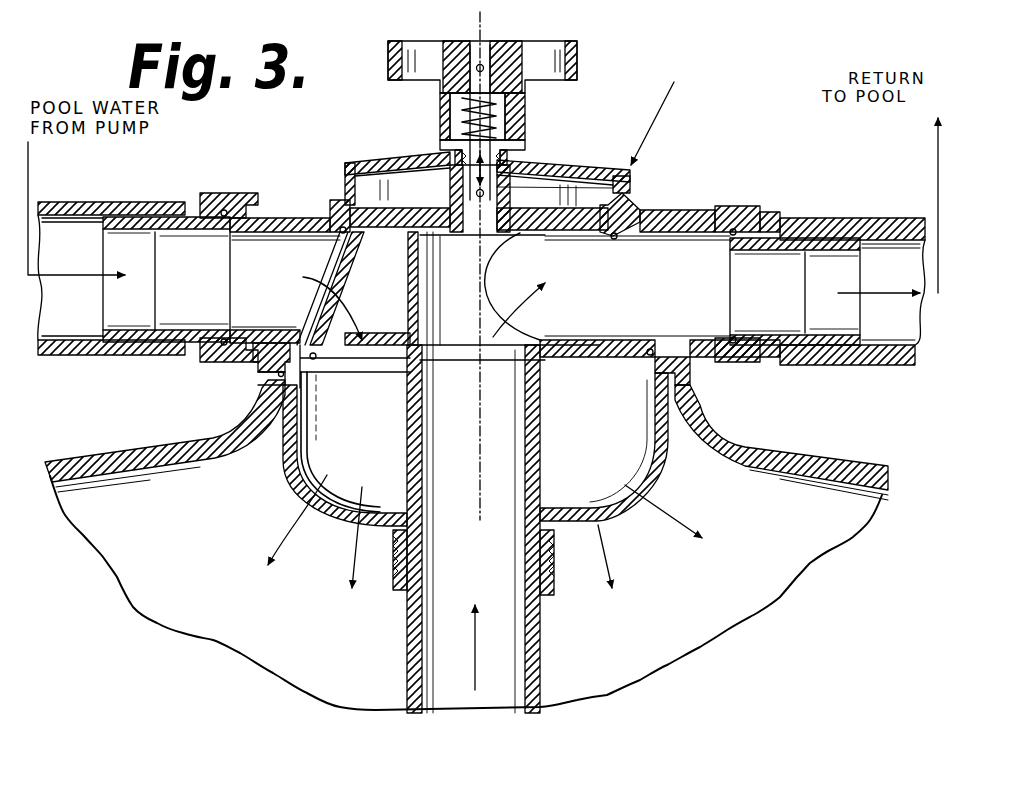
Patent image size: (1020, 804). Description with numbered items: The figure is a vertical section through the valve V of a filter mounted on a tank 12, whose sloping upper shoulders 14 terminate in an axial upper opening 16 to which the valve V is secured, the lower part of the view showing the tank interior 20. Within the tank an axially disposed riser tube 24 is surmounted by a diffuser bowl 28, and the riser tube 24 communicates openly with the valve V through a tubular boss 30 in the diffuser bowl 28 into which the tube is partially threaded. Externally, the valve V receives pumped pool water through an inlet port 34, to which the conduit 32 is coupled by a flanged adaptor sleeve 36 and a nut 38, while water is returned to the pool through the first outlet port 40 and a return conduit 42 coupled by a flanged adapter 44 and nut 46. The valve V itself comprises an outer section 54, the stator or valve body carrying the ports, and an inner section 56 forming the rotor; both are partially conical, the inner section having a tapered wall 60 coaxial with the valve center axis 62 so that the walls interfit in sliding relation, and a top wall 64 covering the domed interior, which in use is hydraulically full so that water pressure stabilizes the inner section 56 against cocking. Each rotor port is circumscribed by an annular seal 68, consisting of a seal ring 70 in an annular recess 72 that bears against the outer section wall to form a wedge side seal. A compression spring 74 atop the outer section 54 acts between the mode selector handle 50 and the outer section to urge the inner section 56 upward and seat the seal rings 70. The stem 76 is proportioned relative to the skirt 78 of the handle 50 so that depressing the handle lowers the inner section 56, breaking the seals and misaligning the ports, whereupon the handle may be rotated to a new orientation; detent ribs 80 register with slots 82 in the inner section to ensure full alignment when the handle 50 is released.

The tank 12 is at (752, 620).
The sloping upper shoulders 14 is at (837, 462).
The axial upper opening 16 is at (300, 405).
The tank interior 20 is at (185, 607).
The riser tube 24 is at (412, 698).
The diffuser bowl 28 is at (663, 480).
The tubular boss 30 is at (545, 455).
The conduit 32 is at (70, 353).
The inlet port 34 is at (302, 226).
The flanged adaptor sleeve 36 is at (200, 225).
The nut 38 is at (220, 193).
The first outlet port 40 is at (690, 230).
The return conduit 42 is at (885, 222).
The flanged adapter 44 is at (768, 250).
The nut 46 is at (735, 208).
The mode selector handle 50 is at (388, 50).
The outer section 54 is at (530, 166).
The inner section 56 is at (552, 205).
The tapered wall 60 is at (318, 250).
The valve center axis 62 is at (487, 22).
The top wall 64 is at (452, 230).
The annular seal 68 is at (620, 218).
The seal ring 70 is at (609, 238).
The annular recess 72 is at (322, 358).
The compression spring 74 is at (450, 108).
The stem 76 is at (478, 48).
The skirt 78 is at (455, 137).
The detent ribs 80 is at (617, 205).
The slots 82 is at (590, 180).
The valve V is at (656, 108).